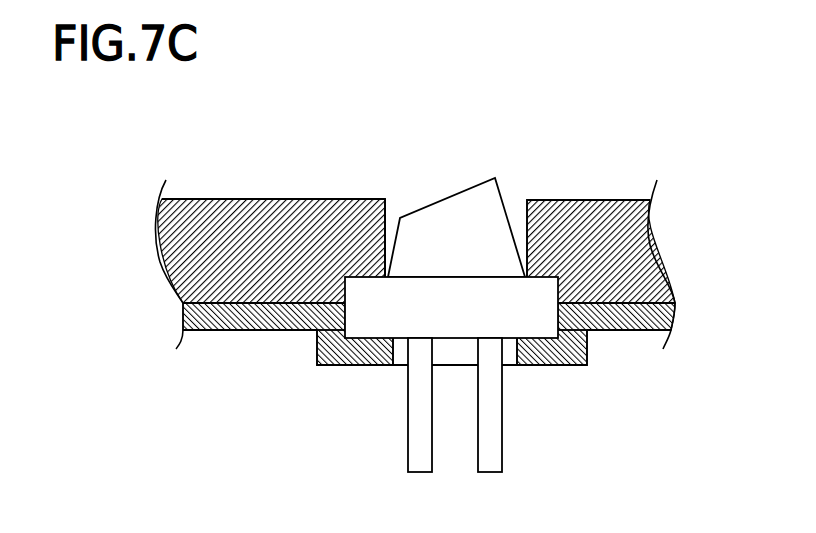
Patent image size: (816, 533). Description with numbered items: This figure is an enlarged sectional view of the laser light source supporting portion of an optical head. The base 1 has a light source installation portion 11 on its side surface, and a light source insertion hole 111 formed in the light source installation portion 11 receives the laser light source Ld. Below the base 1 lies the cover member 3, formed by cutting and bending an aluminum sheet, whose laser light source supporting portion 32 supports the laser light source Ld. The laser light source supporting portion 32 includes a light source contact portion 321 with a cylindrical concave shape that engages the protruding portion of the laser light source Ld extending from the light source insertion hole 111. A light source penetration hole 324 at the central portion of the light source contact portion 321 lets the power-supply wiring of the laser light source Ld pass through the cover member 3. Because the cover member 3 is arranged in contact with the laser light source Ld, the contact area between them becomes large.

The base 1 is at (260, 237).
The light source installation portion 11 is at (258, 328).
The light source insertion hole 111 is at (358, 263).
The cover member 3 is at (420, 366).
The laser light source supporting portion 32 is at (265, 318).
The light source contact portion 321 is at (587, 367).
The light source penetration hole 324 is at (457, 352).
The laser light source Ld is at (508, 297).